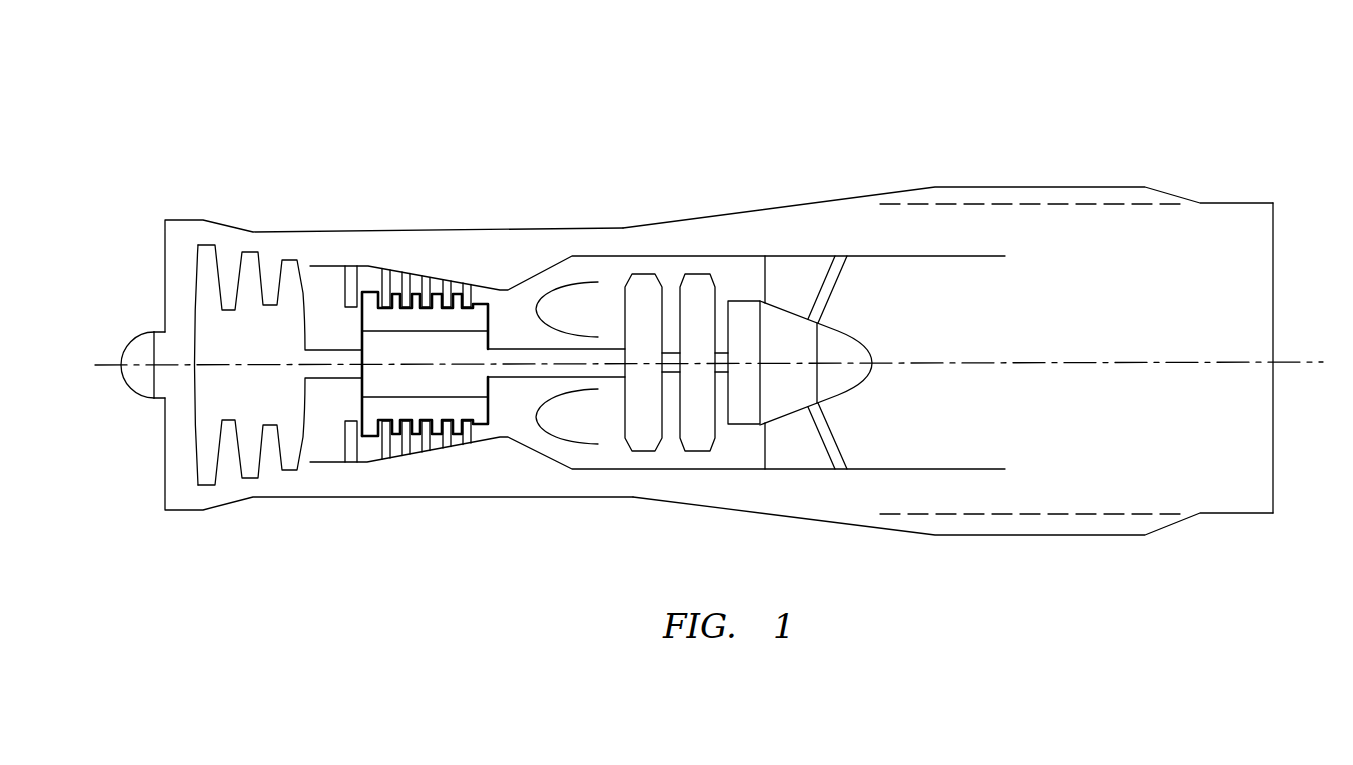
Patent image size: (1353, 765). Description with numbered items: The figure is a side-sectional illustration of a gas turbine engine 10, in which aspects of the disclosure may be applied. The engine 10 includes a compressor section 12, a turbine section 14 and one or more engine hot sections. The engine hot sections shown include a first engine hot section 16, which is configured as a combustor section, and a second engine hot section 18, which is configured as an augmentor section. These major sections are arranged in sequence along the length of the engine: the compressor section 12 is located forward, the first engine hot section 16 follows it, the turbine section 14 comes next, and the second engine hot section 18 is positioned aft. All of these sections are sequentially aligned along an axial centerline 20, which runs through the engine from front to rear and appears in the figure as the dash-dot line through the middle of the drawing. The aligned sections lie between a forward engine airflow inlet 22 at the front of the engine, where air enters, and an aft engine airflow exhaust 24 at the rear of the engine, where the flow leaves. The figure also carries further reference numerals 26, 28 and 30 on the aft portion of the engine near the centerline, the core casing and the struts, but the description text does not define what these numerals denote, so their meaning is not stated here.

The gas turbine engine 10 is at (169, 128).
The compressor section 12 is at (418, 258).
The turbine section 14 is at (674, 240).
The first engine hot section 16 is at (571, 240).
The second engine hot section 18 is at (816, 236).
The axial centerline 20 is at (1302, 364).
The forward engine airflow inlet 22 is at (165, 463).
The aft engine airflow exhaust 24 is at (1273, 479).
The tail cone 26 is at (838, 395).
The core casing 28 is at (976, 468).
The struts 30 is at (810, 441).